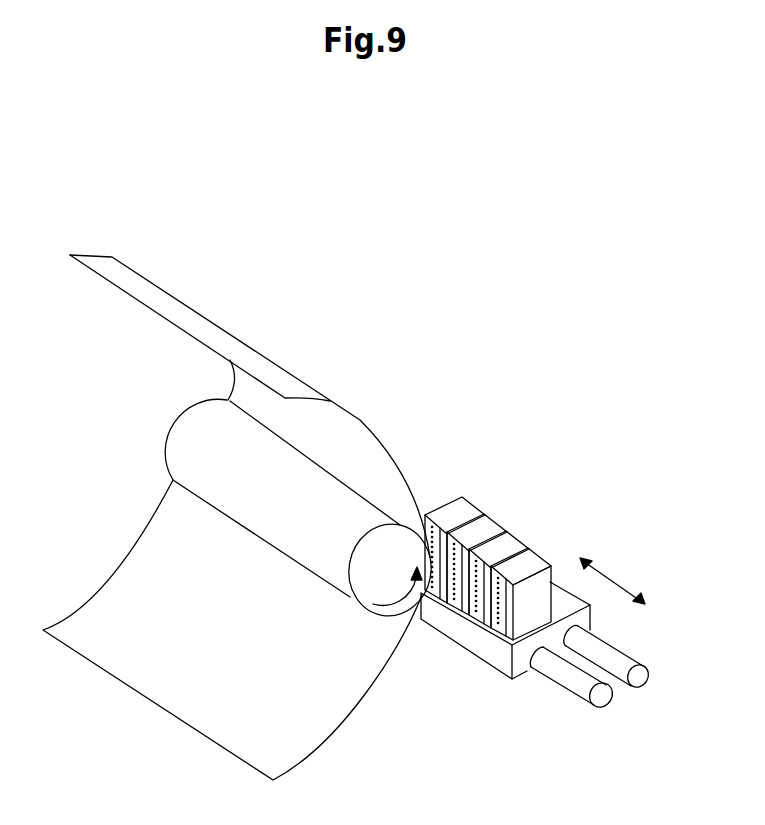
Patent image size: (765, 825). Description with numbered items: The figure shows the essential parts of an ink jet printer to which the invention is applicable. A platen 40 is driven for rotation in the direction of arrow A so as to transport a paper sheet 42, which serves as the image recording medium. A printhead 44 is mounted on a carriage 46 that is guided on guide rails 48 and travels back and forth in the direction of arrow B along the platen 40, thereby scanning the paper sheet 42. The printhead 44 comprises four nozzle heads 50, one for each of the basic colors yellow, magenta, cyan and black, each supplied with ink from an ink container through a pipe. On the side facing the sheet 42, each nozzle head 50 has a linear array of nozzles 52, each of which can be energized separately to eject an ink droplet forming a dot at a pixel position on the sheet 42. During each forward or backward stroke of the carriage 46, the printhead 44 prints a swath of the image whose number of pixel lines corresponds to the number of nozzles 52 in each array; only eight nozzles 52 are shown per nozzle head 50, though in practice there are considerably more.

The platen 40 is at (173, 437).
The paper sheet 42 is at (170, 717).
The printhead 44 is at (536, 595).
The carriage 46 is at (493, 677).
The guide rails 48 is at (563, 697).
The nozzle heads 50 is at (448, 507).
The nozzles 52 is at (468, 615).